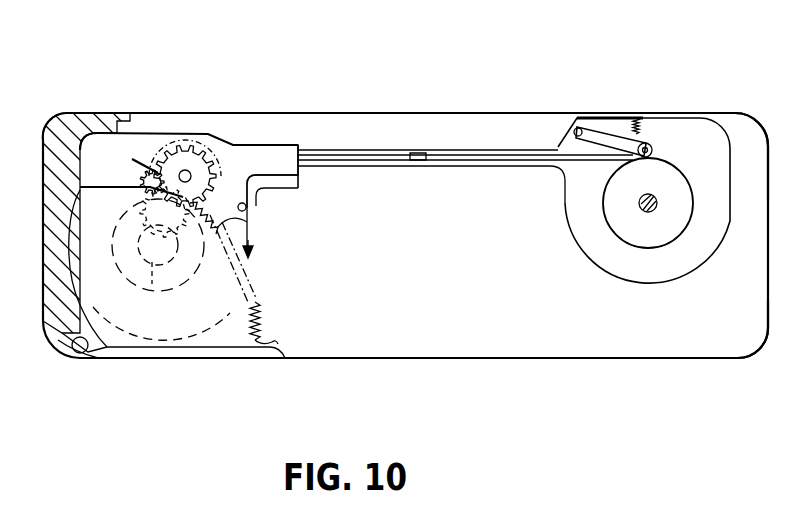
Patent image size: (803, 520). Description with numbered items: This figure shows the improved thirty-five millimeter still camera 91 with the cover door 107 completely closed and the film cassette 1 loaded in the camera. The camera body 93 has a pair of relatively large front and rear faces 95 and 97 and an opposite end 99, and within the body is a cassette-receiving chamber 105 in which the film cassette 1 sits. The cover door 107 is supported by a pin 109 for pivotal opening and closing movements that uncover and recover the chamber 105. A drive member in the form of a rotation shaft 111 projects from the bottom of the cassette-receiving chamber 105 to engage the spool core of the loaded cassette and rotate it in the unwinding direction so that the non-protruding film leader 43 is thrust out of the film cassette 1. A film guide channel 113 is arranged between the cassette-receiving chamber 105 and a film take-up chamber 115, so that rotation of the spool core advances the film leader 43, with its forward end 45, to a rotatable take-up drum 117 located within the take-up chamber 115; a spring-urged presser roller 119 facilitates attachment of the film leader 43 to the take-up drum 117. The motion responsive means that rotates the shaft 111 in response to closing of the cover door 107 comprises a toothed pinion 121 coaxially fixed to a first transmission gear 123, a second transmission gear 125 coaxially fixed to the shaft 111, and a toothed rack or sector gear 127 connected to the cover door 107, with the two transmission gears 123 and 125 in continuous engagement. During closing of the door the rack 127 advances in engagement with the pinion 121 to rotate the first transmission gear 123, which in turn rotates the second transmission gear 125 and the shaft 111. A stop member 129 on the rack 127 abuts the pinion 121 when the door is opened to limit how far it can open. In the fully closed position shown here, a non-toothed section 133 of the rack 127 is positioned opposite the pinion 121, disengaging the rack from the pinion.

The film cassette 1 is at (253, 258).
The film leader 43 is at (447, 148).
The forward end 45 is at (642, 153).
The still camera 91 is at (587, 101).
The camera body 93 is at (760, 346).
The front face 95 is at (447, 358).
The rear face 97 is at (318, 112).
The opposite end 99 is at (770, 130).
The cassette-receiving chamber 105 is at (246, 206).
The cover door 107 is at (33, 162).
The pin 109 is at (82, 354).
The rotation shaft 111 is at (152, 292).
The film guide channel 113 is at (421, 161).
The film take-up chamber 115 is at (628, 259).
The take-up drum 117 is at (621, 227).
The presser roller 119 is at (659, 153).
The toothed pinion 121 is at (176, 150).
The first transmission gear 123 is at (203, 150).
The second transmission gear 125 is at (238, 288).
The rack 127 is at (252, 254).
The stop member 129 is at (278, 342).
The non-toothed section 133 is at (132, 159).